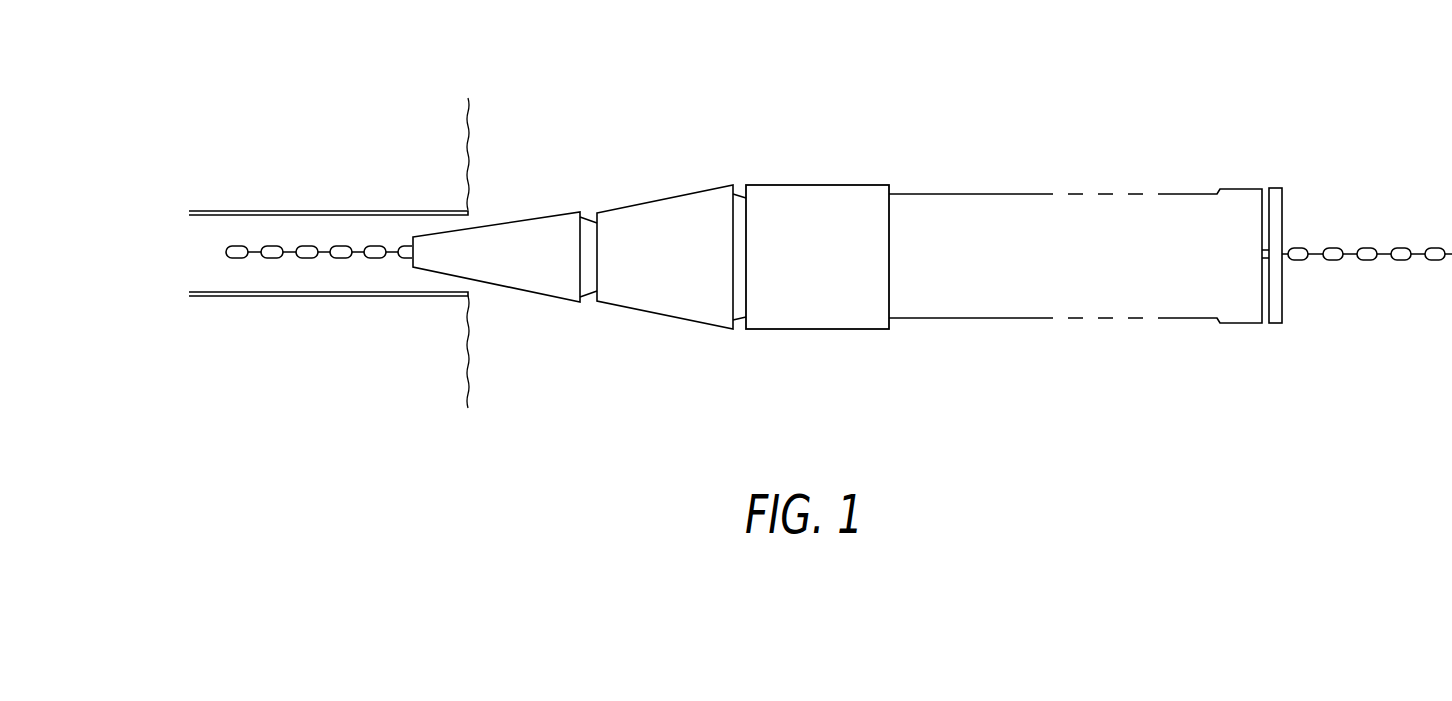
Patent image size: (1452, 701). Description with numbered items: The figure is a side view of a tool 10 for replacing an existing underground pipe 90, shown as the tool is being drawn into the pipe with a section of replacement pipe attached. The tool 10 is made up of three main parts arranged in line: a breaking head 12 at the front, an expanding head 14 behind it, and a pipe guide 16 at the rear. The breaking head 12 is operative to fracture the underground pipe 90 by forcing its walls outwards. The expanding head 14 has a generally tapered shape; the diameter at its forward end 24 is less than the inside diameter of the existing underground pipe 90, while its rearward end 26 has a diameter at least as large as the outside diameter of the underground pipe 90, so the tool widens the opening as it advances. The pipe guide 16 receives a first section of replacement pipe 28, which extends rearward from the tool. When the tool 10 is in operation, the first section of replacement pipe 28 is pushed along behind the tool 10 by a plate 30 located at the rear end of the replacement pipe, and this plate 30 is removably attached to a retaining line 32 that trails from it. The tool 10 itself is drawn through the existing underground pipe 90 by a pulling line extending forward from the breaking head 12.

The tool 10 is at (814, 78).
The breaking head 12 is at (523, 235).
The expanding head 14 is at (673, 227).
The pipe guide 16 is at (860, 212).
The forward end 24 is at (597, 303).
The rearward end 26 is at (733, 330).
The first section of replacement pipe 28 is at (1002, 322).
The plate 30 is at (1277, 188).
The retaining line 32 is at (1333, 262).
The underground pipe 90 is at (345, 211).